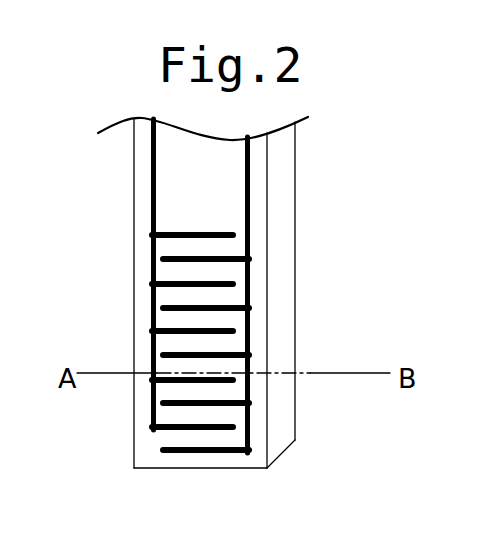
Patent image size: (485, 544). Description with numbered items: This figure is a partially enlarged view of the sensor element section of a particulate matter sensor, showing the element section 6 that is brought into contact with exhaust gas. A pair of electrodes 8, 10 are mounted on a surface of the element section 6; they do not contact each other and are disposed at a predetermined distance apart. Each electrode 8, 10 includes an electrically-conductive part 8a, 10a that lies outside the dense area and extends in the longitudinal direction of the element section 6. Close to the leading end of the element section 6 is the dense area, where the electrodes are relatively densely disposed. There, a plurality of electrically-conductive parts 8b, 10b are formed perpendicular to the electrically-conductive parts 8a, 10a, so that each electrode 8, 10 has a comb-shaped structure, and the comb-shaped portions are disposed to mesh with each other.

The element section 6 is at (310, 128).
The electrode 8 is at (143, 274).
The electrically-conductive part 8a is at (150, 161).
The electrically-conductive parts 8b is at (172, 328).
The electrode 10 is at (281, 295).
The electrically-conductive part 10a is at (250, 168).
The electrically-conductive parts 10b is at (230, 352).